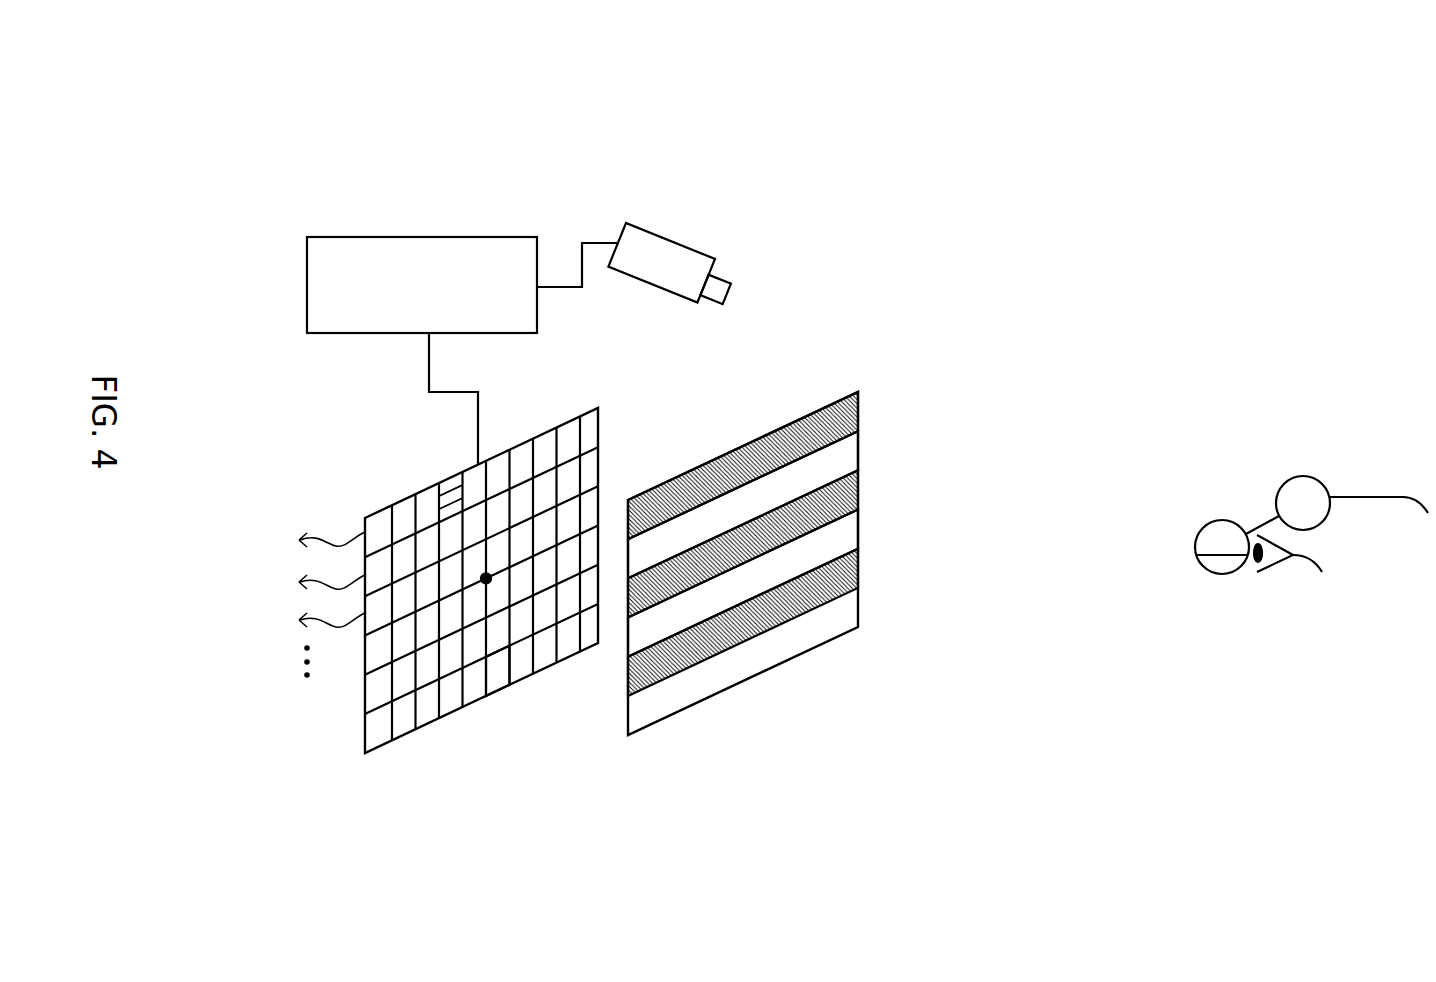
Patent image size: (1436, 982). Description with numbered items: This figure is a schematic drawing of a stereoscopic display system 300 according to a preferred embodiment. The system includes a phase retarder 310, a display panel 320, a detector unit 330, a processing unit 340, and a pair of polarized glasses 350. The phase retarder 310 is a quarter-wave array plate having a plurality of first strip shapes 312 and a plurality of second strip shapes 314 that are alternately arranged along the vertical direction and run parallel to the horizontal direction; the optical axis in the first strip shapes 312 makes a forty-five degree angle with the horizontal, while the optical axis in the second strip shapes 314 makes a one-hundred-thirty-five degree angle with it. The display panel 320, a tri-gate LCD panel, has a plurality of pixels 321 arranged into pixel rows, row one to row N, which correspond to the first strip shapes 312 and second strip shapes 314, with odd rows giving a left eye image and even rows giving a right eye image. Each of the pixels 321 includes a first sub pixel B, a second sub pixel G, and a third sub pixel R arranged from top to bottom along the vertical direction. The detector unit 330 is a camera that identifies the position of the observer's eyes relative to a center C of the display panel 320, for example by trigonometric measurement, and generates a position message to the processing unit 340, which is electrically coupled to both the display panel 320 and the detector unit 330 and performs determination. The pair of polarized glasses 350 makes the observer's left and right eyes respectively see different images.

The stereoscopic display system 300 is at (235, 112).
The phase retarder 310 is at (790, 530).
The first strip shapes 312 is at (840, 425).
The second strip shapes 314 is at (840, 528).
The display panel 320 is at (567, 421).
The pixels 321 is at (492, 678).
The detector unit 330 is at (680, 238).
The processing unit 340 is at (307, 283).
The pair of polarized glasses 350 is at (1304, 443).
The first sub pixel B is at (456, 480).
The second sub pixel G is at (456, 496).
The third sub pixel R is at (456, 511).
The center of the display panel C is at (486, 580).